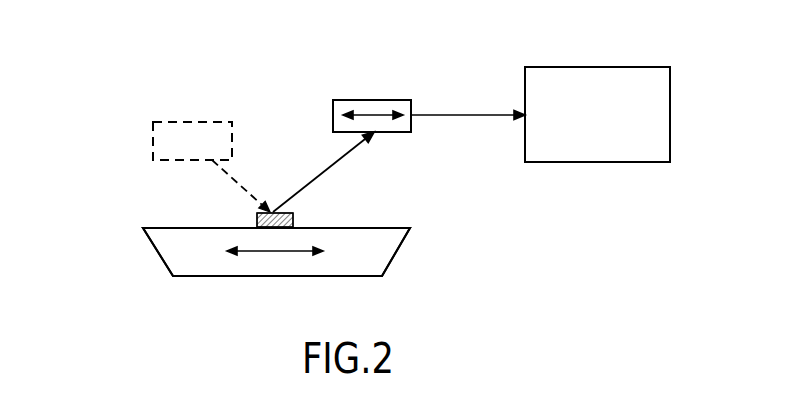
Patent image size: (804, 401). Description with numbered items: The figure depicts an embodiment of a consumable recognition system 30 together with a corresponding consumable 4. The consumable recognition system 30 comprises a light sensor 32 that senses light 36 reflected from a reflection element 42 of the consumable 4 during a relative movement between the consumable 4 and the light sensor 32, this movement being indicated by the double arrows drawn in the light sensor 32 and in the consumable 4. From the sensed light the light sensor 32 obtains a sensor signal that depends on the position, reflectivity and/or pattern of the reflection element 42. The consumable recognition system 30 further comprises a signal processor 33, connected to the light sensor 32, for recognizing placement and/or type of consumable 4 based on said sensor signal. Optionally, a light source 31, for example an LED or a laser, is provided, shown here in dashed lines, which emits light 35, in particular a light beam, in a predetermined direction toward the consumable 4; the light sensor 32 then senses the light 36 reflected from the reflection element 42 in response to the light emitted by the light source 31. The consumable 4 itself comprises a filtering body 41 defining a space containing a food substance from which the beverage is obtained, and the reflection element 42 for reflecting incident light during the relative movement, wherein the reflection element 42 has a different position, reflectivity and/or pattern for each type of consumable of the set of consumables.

The consumable 4 is at (140, 261).
The consumable recognition system 30 is at (117, 132).
The light source 31 is at (192, 122).
The light sensor 32 is at (364, 100).
The signal processor 33 is at (593, 67).
The emitted light 35 is at (232, 178).
The reflected light 36 is at (343, 158).
The filtering body 41 is at (405, 241).
The reflection element 42 is at (293, 219).